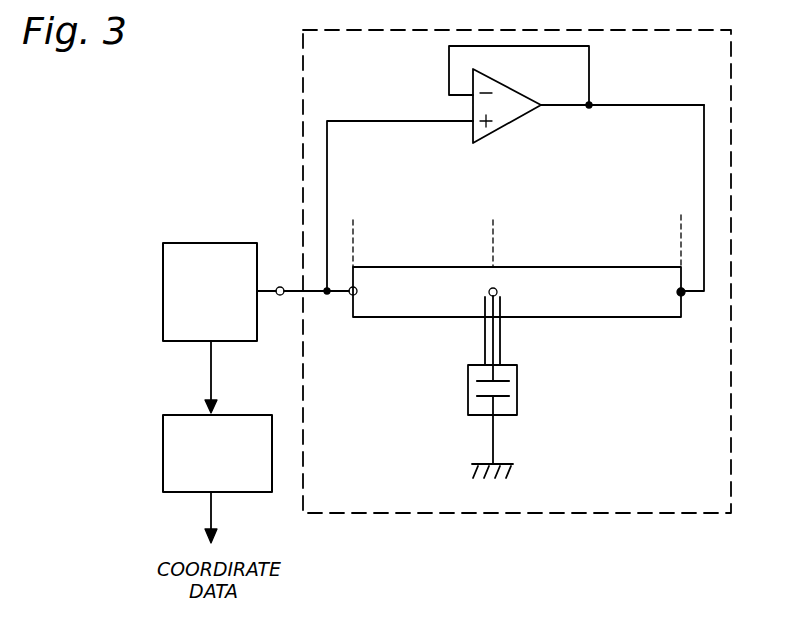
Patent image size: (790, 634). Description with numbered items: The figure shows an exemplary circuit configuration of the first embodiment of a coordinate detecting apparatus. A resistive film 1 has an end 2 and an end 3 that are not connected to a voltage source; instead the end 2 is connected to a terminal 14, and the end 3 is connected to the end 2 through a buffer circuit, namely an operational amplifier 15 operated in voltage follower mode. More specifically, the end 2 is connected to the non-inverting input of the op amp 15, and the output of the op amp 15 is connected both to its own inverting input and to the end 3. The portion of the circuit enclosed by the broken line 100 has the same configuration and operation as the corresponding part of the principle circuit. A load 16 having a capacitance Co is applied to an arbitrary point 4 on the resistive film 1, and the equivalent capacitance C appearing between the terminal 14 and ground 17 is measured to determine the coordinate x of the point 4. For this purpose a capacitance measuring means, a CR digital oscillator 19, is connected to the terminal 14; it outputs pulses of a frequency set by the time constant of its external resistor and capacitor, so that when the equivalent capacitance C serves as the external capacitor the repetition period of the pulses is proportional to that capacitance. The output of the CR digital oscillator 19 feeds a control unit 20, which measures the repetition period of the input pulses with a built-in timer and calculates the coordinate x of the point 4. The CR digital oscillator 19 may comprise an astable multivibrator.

The broken line 100 is at (303, 88).
The operational amplifier 15 is at (517, 118).
The terminal 14 is at (283, 286).
The CR digital oscillator 19 is at (163, 291).
The control unit 20 is at (163, 440).
The resistive film 1 is at (605, 319).
The end 2 is at (349, 298).
The end 3 is at (685, 298).
The point 4 is at (489, 298).
The load 16 is at (501, 346).
The capacitance Co is at (510, 397).
The ground 17 is at (512, 475).